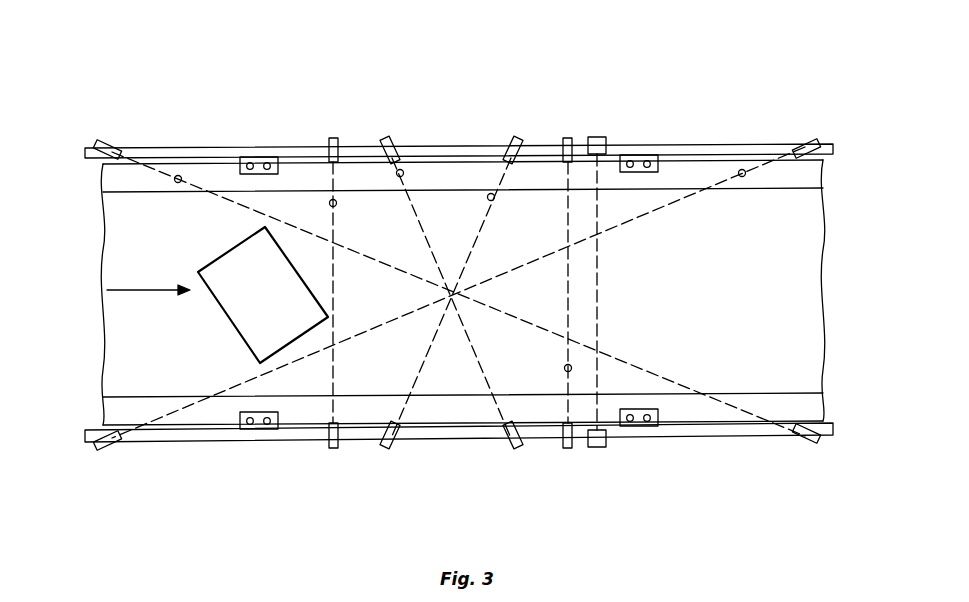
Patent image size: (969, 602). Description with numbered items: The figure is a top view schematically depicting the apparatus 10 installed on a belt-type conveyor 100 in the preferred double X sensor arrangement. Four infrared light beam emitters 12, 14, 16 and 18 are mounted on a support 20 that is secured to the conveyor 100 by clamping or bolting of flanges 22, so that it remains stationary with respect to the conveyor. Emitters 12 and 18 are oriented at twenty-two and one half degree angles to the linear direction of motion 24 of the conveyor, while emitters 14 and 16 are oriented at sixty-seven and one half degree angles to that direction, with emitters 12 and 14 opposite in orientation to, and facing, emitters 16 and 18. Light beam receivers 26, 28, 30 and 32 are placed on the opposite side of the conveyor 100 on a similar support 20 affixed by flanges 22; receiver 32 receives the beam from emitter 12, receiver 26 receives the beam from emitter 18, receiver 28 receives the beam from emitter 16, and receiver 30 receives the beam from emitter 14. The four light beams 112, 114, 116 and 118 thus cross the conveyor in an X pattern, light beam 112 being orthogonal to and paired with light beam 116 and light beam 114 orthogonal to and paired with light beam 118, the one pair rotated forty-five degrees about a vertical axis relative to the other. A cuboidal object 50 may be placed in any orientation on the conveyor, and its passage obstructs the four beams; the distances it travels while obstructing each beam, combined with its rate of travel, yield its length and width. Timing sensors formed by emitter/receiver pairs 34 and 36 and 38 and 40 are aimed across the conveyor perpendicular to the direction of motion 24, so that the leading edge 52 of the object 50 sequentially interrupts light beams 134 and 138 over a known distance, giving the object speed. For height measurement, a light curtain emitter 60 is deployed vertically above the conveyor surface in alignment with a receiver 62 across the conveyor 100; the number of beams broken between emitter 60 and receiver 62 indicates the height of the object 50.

The apparatus 10 is at (603, 84).
The light beam emitter 12 is at (98, 143).
The light beam emitter 14 is at (390, 138).
The light beam emitter 16 is at (514, 138).
The light beam emitter 18 is at (806, 140).
The support 20 is at (208, 146).
The flange 22 is at (253, 157).
The direction of motion 24 is at (142, 290).
The light beam receiver 26 is at (103, 448).
The light beam receiver 28 is at (390, 450).
The light beam receiver 30 is at (512, 450).
The light beam receiver 32 is at (812, 443).
The timing sensor light beam emitter 34 is at (330, 138).
The timing sensor light beam receiver 36 is at (333, 450).
The timing sensor light beam emitter 38 is at (568, 138).
The timing sensor light beam receiver 40 is at (568, 450).
The object 50 is at (278, 305).
The leading edge 52 is at (330, 317).
The emitter 60 is at (602, 137).
The receiver 62 is at (598, 447).
The belt-type conveyor 100 is at (458, 172).
The light beam 112 is at (178, 175).
The light beam 114 is at (402, 169).
The light beam 116 is at (491, 193).
The light beam 118 is at (742, 169).
The light beam 134 is at (335, 199).
The light beam 138 is at (564, 367).